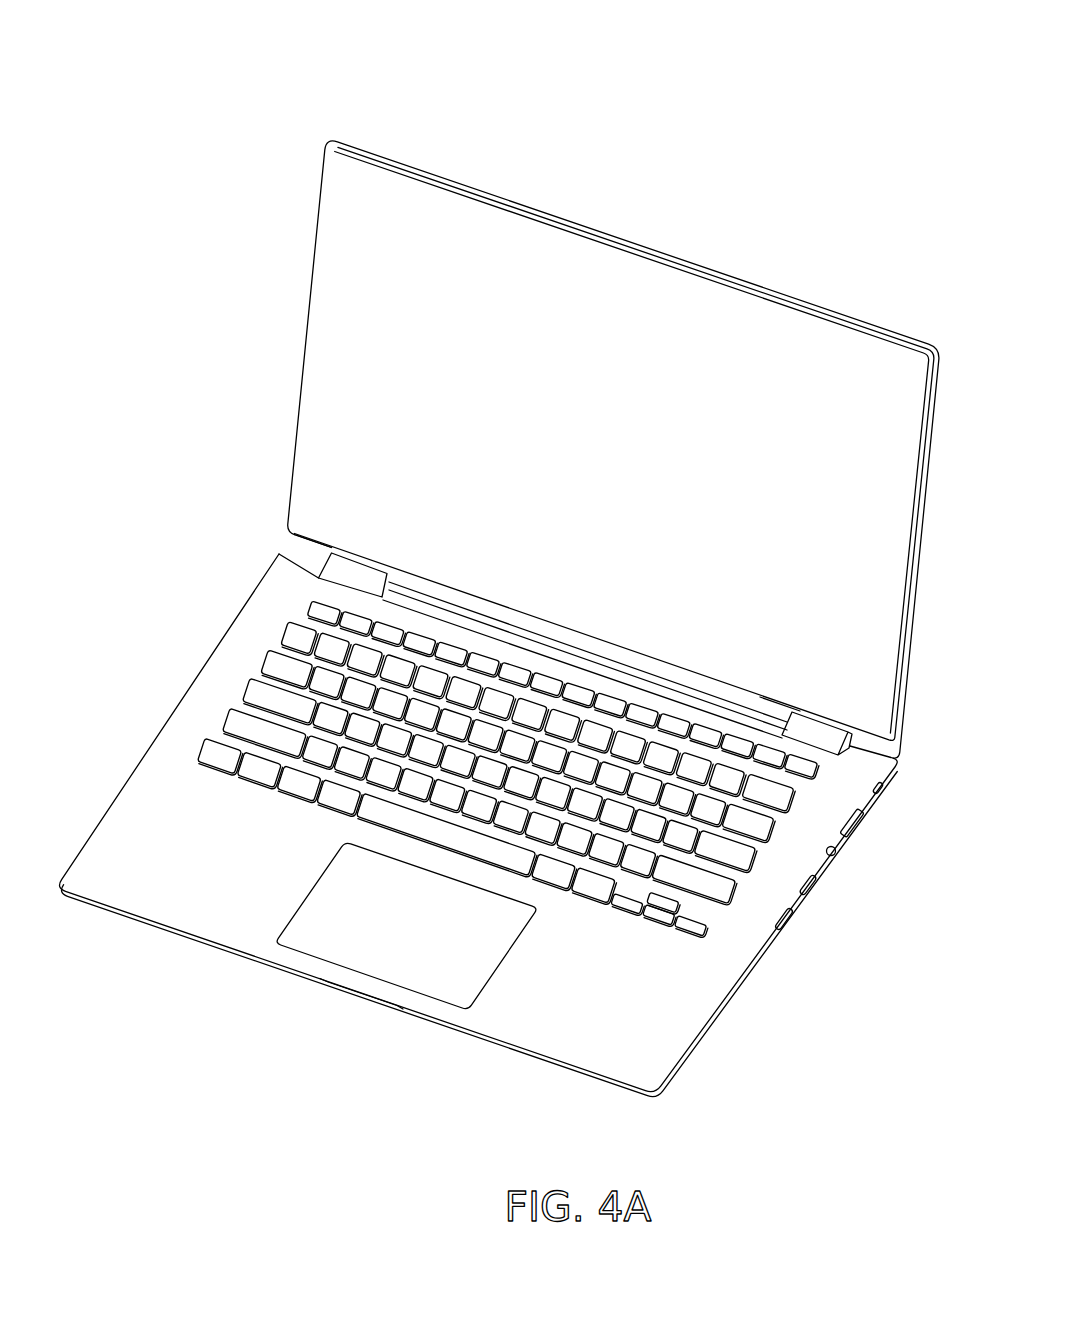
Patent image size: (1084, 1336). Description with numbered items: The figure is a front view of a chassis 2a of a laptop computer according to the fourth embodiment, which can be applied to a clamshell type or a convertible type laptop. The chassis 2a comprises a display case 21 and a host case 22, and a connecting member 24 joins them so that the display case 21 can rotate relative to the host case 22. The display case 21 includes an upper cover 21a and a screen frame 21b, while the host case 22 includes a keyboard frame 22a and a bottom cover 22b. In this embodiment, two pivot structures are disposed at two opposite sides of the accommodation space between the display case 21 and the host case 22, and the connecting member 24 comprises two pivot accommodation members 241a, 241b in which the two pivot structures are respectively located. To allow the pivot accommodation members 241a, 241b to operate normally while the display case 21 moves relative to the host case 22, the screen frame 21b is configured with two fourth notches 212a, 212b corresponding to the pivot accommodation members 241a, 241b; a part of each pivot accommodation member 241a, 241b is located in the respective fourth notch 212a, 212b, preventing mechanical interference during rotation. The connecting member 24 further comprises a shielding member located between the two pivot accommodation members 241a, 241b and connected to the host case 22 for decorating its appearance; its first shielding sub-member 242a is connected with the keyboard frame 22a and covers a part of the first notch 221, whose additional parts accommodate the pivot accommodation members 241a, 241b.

The chassis 2a is at (300, 83).
The display case 21 is at (717, 203).
The upper cover 21a is at (790, 290).
The screen frame 21b is at (737, 303).
The fourth notch 212a is at (322, 551).
The fourth notch 212b is at (782, 709).
The host case 22 is at (907, 912).
The keyboard frame 22a is at (767, 878).
The bottom cover 22b is at (773, 952).
The first notch 221 is at (310, 571).
The connecting member 24 is at (475, 612).
The pivot accommodation member 241a is at (353, 575).
The pivot accommodation member 241b is at (822, 735).
The first shielding sub-member 242a is at (552, 651).